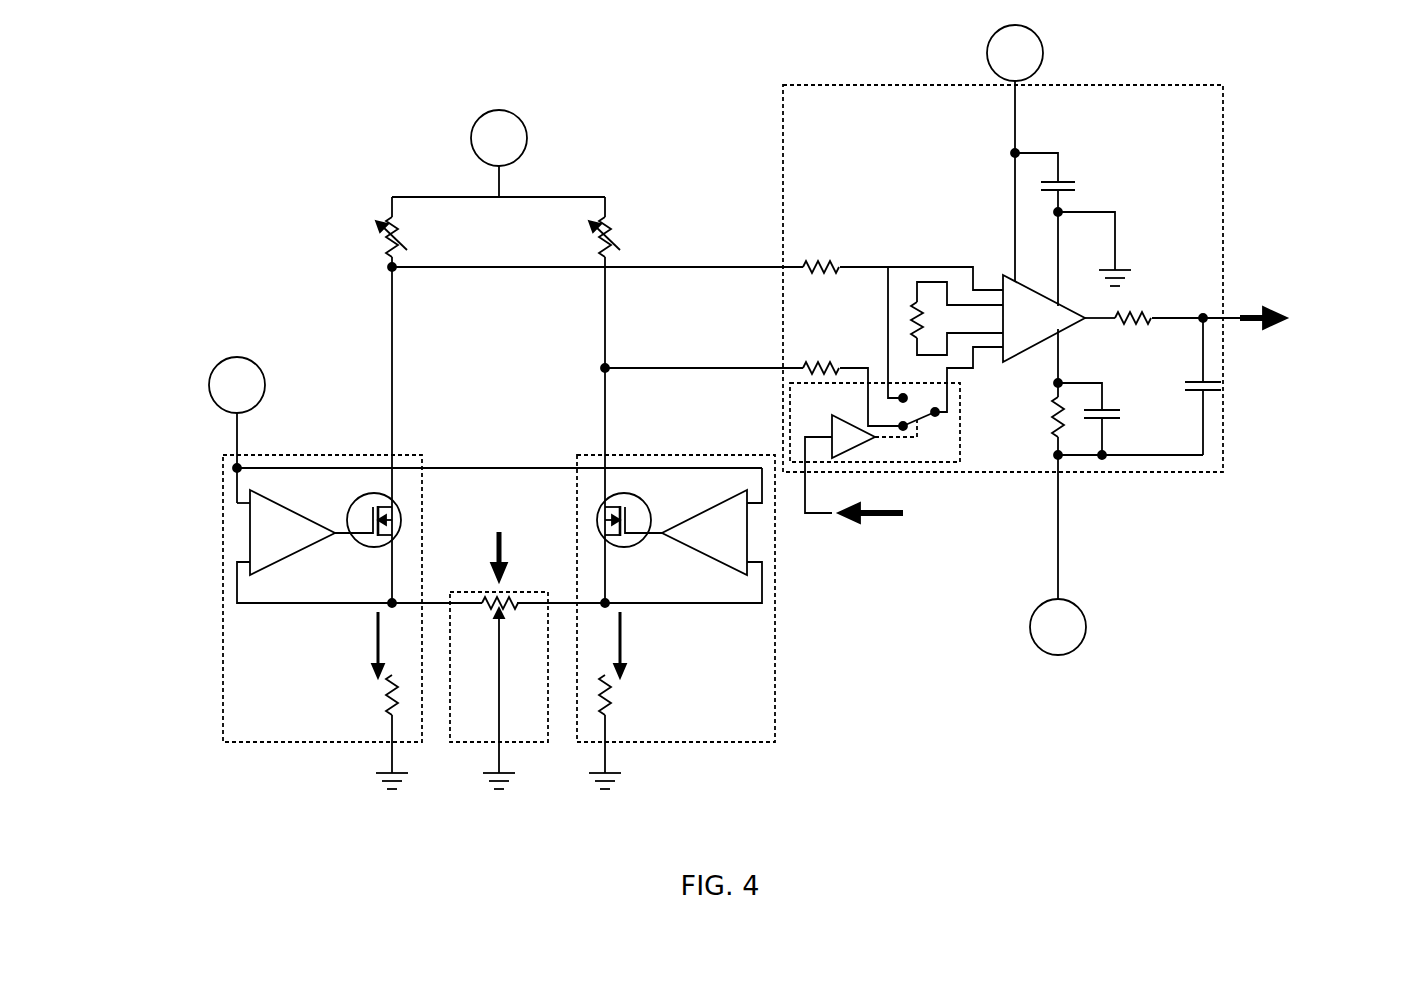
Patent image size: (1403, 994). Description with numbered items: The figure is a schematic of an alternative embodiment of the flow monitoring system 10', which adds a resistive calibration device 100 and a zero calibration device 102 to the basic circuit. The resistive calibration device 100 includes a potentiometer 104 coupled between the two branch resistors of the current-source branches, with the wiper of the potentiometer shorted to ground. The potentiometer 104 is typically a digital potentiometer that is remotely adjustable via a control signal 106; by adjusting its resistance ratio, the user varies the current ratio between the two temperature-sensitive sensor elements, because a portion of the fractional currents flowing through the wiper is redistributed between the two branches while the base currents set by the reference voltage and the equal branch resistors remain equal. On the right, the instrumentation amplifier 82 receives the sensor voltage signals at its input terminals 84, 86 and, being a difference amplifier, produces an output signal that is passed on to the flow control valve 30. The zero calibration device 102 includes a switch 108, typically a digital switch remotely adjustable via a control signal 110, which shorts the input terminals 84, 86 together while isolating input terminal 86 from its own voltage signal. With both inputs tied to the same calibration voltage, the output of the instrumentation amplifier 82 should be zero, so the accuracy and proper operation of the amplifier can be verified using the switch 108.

The flow monitoring system 10' is at (801, 407).
The instrumentation amplifier 82 is at (1044, 318).
The input terminal 84 is at (1003, 290).
The input terminal 86 is at (1003, 347).
The resistive calibration device 100 is at (498, 677).
The zero calibration device 102 is at (864, 448).
The potentiometer 104 is at (497, 594).
The control signal 106 is at (501, 531).
The switch 108 is at (932, 427).
The control signal 110 is at (933, 516).
The flow control valve 30 is at (1317, 318).